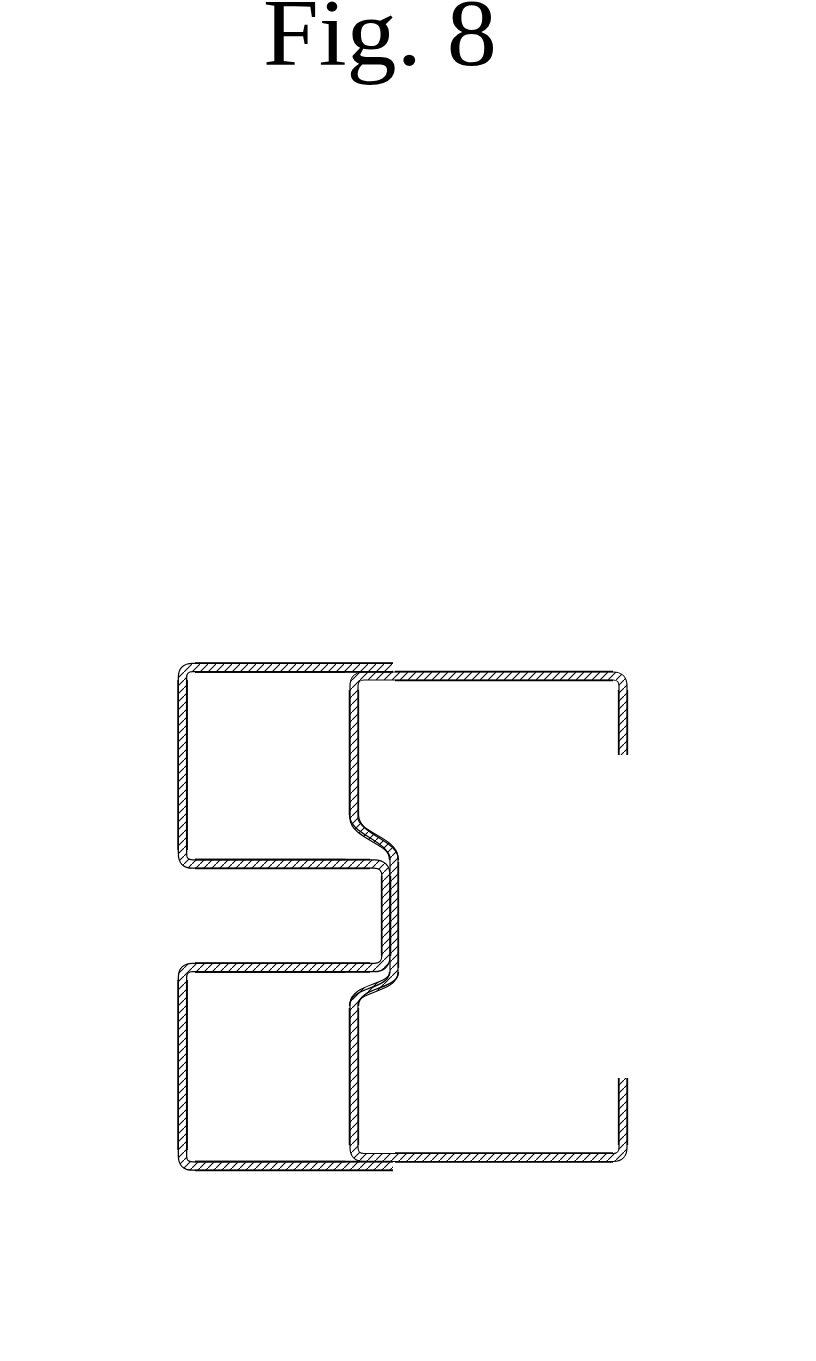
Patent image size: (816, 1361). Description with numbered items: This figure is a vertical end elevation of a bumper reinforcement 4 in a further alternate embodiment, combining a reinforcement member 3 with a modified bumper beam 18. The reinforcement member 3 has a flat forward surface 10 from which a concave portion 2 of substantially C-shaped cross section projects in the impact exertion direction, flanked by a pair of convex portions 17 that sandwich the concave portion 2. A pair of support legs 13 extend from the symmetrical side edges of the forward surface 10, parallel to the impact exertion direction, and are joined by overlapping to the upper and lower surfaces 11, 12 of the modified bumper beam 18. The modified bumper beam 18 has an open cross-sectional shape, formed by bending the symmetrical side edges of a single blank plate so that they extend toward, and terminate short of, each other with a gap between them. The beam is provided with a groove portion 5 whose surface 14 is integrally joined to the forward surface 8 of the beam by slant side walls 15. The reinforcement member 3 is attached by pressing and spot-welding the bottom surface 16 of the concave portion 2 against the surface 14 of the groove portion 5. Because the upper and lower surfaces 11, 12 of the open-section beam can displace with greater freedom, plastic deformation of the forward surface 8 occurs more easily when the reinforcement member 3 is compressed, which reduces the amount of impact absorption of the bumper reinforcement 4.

The concave portion 2 is at (328, 932).
The reinforcement member 3 is at (320, 664).
The bumper reinforcement 4 is at (510, 492).
The groove portion 5 is at (399, 898).
The forward surface of the bumper beam 8 is at (352, 740).
The forward surface of the reinforcement member 10 is at (178, 778).
The upper surface of the bumper beam 11 is at (562, 671).
The lower surface of the bumper beam 12 is at (522, 1162).
The support legs 13 is at (257, 663).
The surface of the groove portion 14 is at (377, 862).
The slant side walls 15 is at (380, 838).
The bottom surface of the concave portion 16 is at (385, 908).
The convex portions 17 is at (315, 785).
The modified bumper beam 18 is at (452, 670).